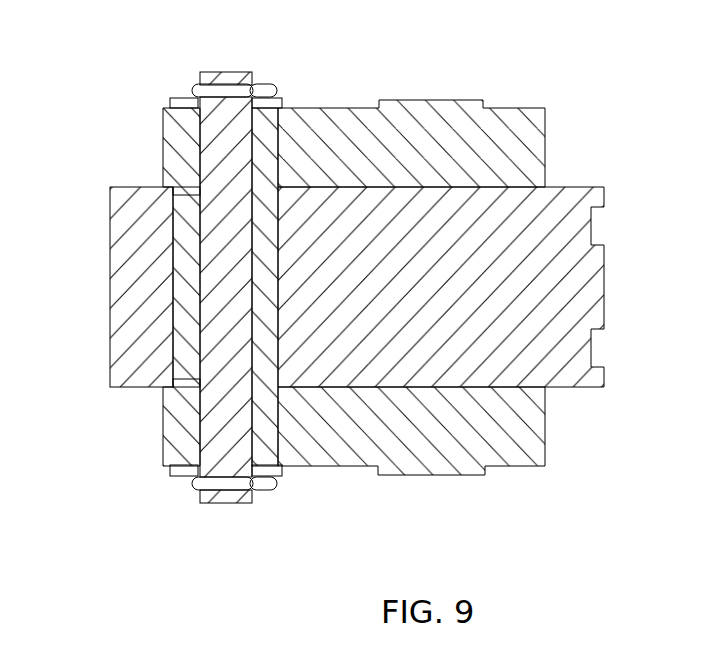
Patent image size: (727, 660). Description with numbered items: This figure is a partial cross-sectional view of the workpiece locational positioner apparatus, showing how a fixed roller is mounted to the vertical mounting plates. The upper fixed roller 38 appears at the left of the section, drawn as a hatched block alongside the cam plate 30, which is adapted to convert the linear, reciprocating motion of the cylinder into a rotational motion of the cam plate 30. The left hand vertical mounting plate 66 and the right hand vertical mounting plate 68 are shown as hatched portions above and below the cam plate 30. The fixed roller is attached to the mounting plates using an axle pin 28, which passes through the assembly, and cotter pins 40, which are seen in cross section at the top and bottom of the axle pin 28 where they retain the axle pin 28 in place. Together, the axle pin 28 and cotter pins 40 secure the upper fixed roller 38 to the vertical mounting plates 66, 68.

The axle pin 28 is at (196, 260).
The cam plate 30 is at (470, 260).
The upper fixed roller 38 is at (101, 287).
The cotter pin 40 is at (304, 291).
The vertical mounting plate 66 is at (411, 116).
The vertical mounting plate 68 is at (443, 469).